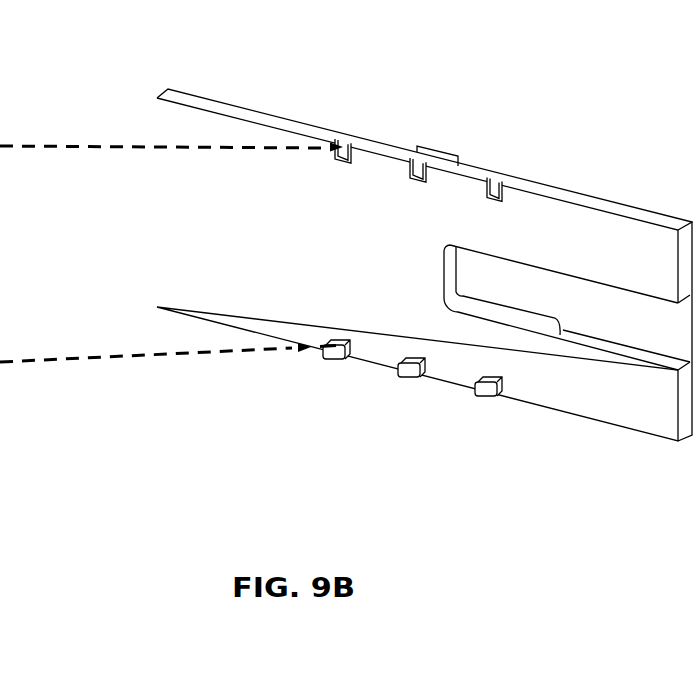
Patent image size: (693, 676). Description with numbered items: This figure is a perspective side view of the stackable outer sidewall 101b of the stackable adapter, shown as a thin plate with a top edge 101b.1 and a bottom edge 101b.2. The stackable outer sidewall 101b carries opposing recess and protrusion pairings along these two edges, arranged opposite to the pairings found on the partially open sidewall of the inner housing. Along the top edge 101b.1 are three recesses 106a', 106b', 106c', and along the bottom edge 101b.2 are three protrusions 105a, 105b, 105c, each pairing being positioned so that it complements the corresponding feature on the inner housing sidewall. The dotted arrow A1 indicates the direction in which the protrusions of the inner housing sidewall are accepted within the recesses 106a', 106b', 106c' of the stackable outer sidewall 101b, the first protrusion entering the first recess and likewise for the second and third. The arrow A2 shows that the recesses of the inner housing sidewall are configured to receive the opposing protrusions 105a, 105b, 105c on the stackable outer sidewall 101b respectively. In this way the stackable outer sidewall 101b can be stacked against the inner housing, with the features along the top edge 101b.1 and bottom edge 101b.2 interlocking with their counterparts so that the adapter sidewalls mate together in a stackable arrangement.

The stackable outer sidewall 101b is at (423, 269).
The top edge 101b.1 is at (227, 122).
The bottom edge 101b.2 is at (557, 408).
The recess 106a' is at (382, 111).
The recess 106b' is at (479, 132).
The recess 106c' is at (573, 159).
The protrusion 105a is at (334, 360).
The protrusion 105b is at (410, 385).
The protrusion 105c is at (488, 404).
The dotted arrow A1 is at (171, 123).
The arrow A2 is at (168, 333).